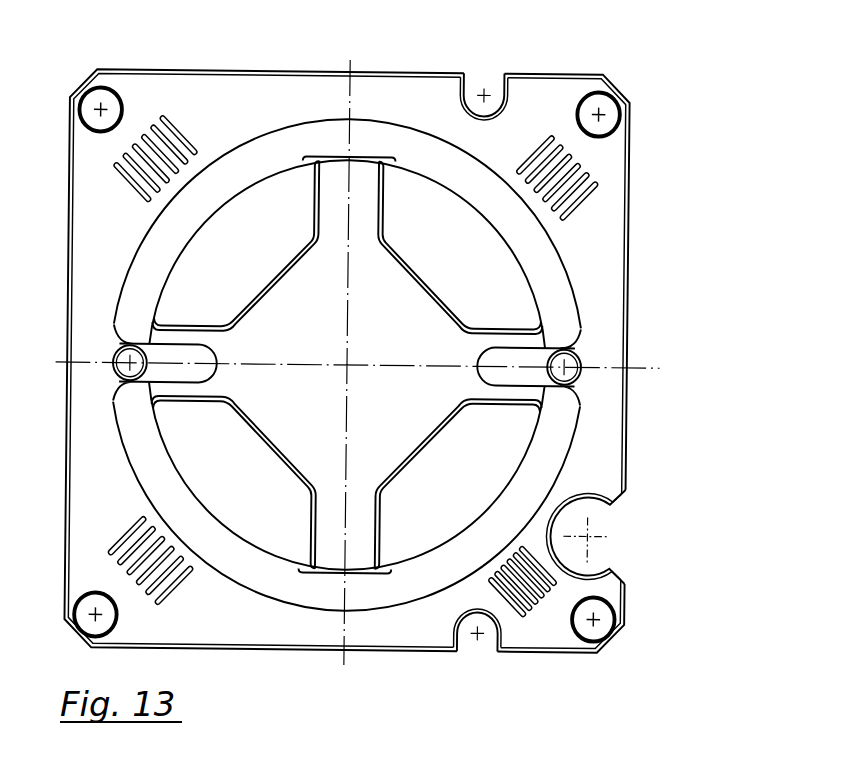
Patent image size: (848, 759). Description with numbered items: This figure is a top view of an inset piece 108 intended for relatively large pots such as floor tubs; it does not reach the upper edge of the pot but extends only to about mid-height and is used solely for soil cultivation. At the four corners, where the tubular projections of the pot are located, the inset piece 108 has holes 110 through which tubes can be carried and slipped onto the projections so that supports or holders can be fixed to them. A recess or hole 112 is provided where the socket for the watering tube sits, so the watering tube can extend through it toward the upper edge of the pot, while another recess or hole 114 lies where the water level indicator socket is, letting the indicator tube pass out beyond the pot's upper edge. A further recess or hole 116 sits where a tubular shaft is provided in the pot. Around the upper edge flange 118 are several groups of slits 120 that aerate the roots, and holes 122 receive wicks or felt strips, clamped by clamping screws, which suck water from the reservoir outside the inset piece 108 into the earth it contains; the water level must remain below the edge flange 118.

The inset piece 108 is at (347, 342).
The holes 110 is at (384, 343).
The recess or hole 112 is at (634, 537).
The recess or hole 114 is at (488, 660).
The recess or hole 116 is at (476, 76).
The upper edge flange 118 is at (387, 361).
The groups of slits 120 is at (399, 366).
The holes 122 is at (384, 335).